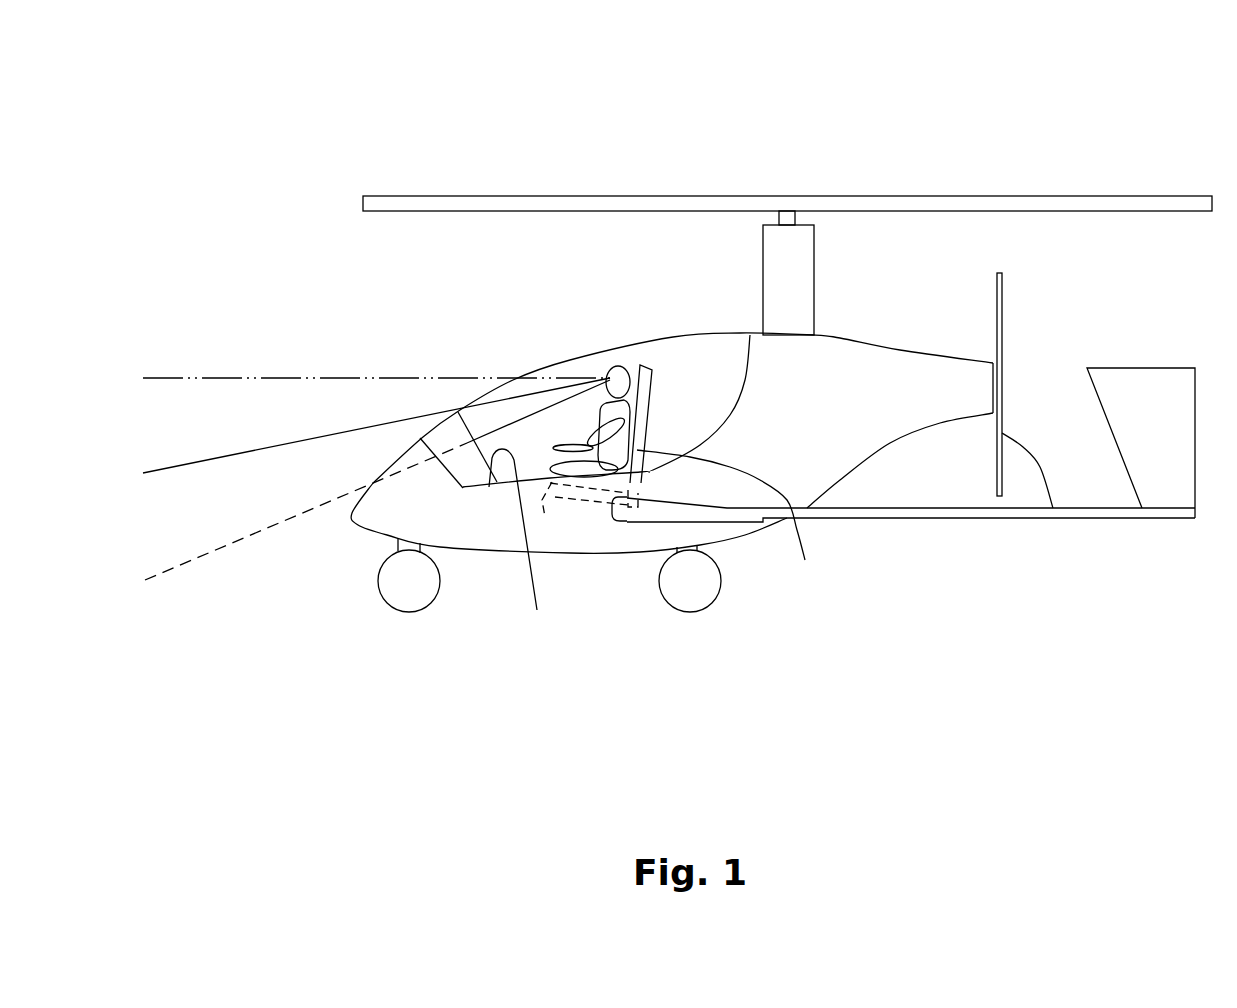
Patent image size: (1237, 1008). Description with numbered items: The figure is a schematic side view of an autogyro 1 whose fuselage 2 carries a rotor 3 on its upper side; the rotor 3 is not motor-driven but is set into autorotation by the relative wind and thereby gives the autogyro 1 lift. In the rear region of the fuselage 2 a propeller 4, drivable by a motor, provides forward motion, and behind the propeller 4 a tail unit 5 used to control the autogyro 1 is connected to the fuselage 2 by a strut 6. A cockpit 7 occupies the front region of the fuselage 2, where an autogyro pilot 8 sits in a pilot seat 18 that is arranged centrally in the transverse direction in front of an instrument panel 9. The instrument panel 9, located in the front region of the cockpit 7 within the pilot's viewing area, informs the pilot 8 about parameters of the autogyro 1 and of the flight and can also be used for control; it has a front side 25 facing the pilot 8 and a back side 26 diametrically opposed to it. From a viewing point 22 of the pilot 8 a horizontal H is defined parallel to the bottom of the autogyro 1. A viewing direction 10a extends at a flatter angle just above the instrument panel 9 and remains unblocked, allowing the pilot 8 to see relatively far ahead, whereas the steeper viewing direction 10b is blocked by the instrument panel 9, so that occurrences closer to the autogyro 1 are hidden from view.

The autogyro 1 is at (266, 154).
The fuselage 2 is at (569, 607).
The rotor 3 is at (787, 178).
The propeller 4 is at (936, 474).
The tail unit 5 is at (1141, 526).
The strut 6 is at (903, 591).
The cockpit 7 is at (683, 363).
The autogyro pilot 8 is at (599, 552).
The instrument panel 9 is at (480, 567).
The viewing direction 10a is at (376, 340).
The viewing direction 10b is at (377, 395).
The pilot seat 18 is at (734, 566).
The viewing point 22 is at (579, 353).
The front side 25 is at (520, 603).
The back side 26 is at (428, 598).
The horizontal H is at (365, 295).